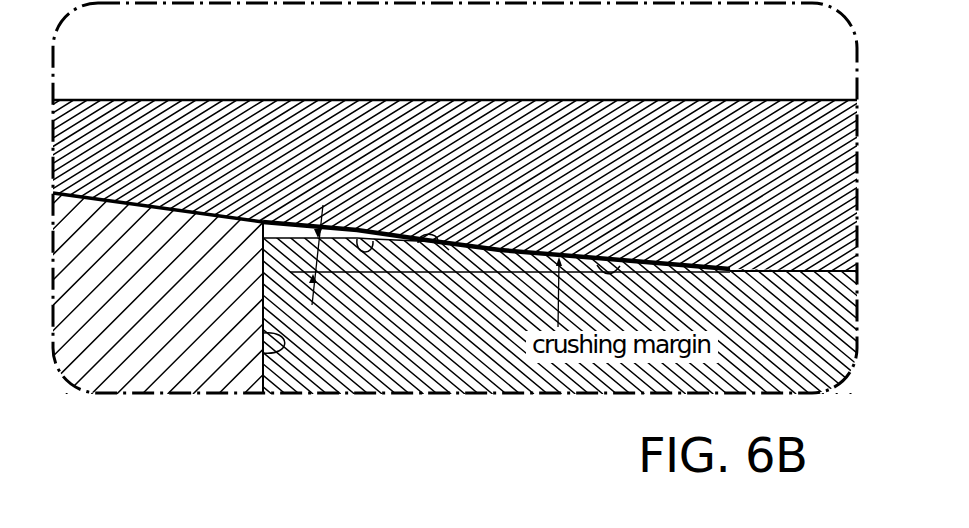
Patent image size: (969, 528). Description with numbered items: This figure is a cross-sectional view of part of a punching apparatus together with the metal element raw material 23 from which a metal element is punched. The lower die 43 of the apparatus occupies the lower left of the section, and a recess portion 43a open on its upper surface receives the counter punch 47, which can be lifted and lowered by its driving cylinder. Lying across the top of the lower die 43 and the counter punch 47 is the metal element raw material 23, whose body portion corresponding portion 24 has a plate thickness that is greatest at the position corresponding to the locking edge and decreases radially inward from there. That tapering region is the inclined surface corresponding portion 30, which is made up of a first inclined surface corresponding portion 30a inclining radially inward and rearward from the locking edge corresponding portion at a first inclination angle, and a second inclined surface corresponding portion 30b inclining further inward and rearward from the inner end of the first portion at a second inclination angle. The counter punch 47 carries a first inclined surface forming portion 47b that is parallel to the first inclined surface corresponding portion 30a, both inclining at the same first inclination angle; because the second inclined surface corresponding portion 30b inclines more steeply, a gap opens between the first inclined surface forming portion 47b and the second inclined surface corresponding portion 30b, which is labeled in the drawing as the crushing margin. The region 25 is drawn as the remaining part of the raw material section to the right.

The metal element raw material 23 is at (598, 90).
The body portion corresponding portion 24 is at (378, 125).
The second member 25 is at (788, 155).
The inclined surface corresponding portion 30 is at (562, 52).
The first inclined surface corresponding portion 30a is at (582, 277).
The second inclined surface corresponding portion 30b is at (380, 240).
The lower die 43 is at (185, 274).
The recess portion 43a is at (262, 332).
The counter punch 47 is at (506, 342).
The first inclined surface forming portion 47b is at (449, 250).